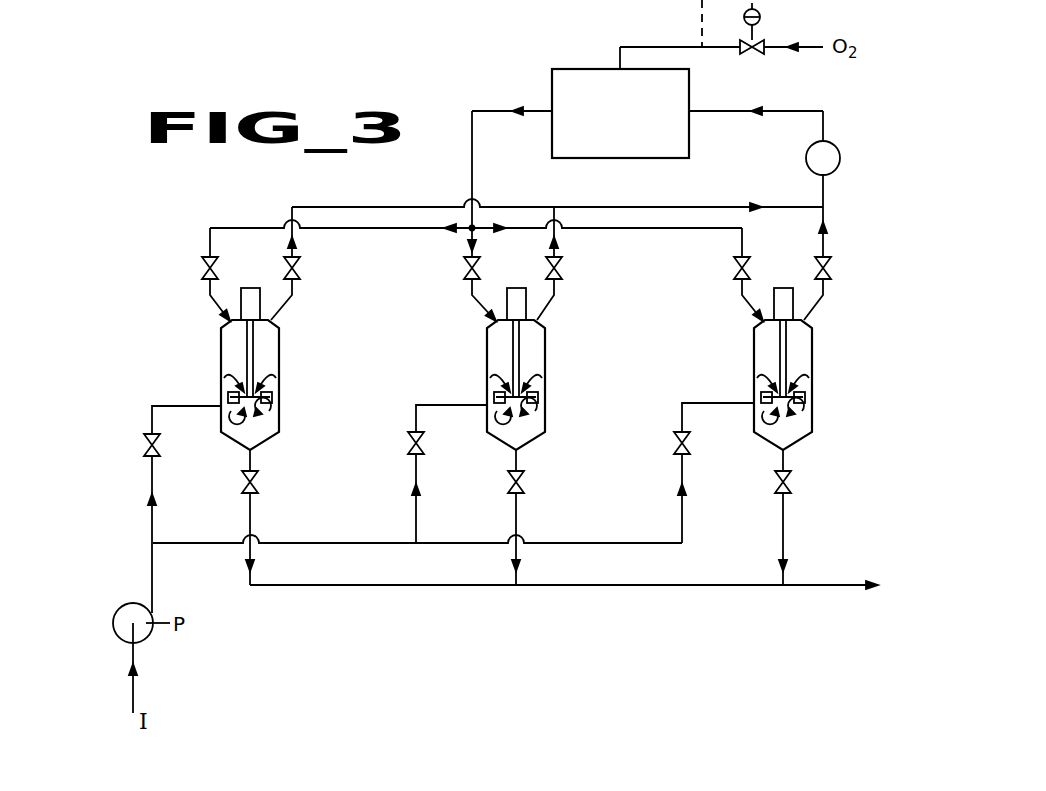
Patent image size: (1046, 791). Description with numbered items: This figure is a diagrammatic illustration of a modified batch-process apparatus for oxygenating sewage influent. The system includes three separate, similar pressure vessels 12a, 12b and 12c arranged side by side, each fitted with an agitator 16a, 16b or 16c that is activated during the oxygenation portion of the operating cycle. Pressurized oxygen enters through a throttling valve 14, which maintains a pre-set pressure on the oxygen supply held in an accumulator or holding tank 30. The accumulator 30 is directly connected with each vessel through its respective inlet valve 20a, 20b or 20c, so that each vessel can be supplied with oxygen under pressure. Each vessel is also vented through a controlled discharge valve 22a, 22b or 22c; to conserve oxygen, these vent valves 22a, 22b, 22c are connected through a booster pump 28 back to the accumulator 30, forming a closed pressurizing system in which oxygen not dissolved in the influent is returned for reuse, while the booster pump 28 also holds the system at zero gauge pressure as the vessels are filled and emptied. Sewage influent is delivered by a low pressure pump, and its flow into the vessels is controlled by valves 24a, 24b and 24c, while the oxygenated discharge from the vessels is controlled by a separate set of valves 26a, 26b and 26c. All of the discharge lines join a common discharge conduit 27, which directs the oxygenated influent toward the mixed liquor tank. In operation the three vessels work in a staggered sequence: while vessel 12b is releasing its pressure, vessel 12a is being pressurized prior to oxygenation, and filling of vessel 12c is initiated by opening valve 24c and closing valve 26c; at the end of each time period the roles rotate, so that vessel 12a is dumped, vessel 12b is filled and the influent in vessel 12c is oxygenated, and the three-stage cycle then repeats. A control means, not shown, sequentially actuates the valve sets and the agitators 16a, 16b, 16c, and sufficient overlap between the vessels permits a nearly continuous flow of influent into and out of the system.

The pressure vessel 12a is at (283, 345).
The pressure vessel 12b is at (549, 345).
The pressure vessel 12c is at (816, 345).
The throttling valve 14 is at (750, 53).
The agitator 16a is at (247, 343).
The agitator 16b is at (513, 342).
The agitator 16c is at (780, 340).
The controlled valve 20a is at (202, 270).
The controlled valve 20b is at (465, 270).
The controlled valve 20c is at (734, 270).
The controlled discharge valve 22a is at (300, 270).
The controlled discharge valve 22b is at (562, 271).
The controlled discharge valve 22c is at (831, 271).
The valve 24a is at (143, 445).
The valve 24b is at (406, 444).
The valve 24c is at (672, 445).
The valve 26a is at (259, 481).
The valve 26b is at (525, 481).
The valve 26c is at (792, 481).
The discharge conduit 27 is at (408, 588).
The booster pump 28 is at (836, 149).
The accumulator 30 is at (636, 122).